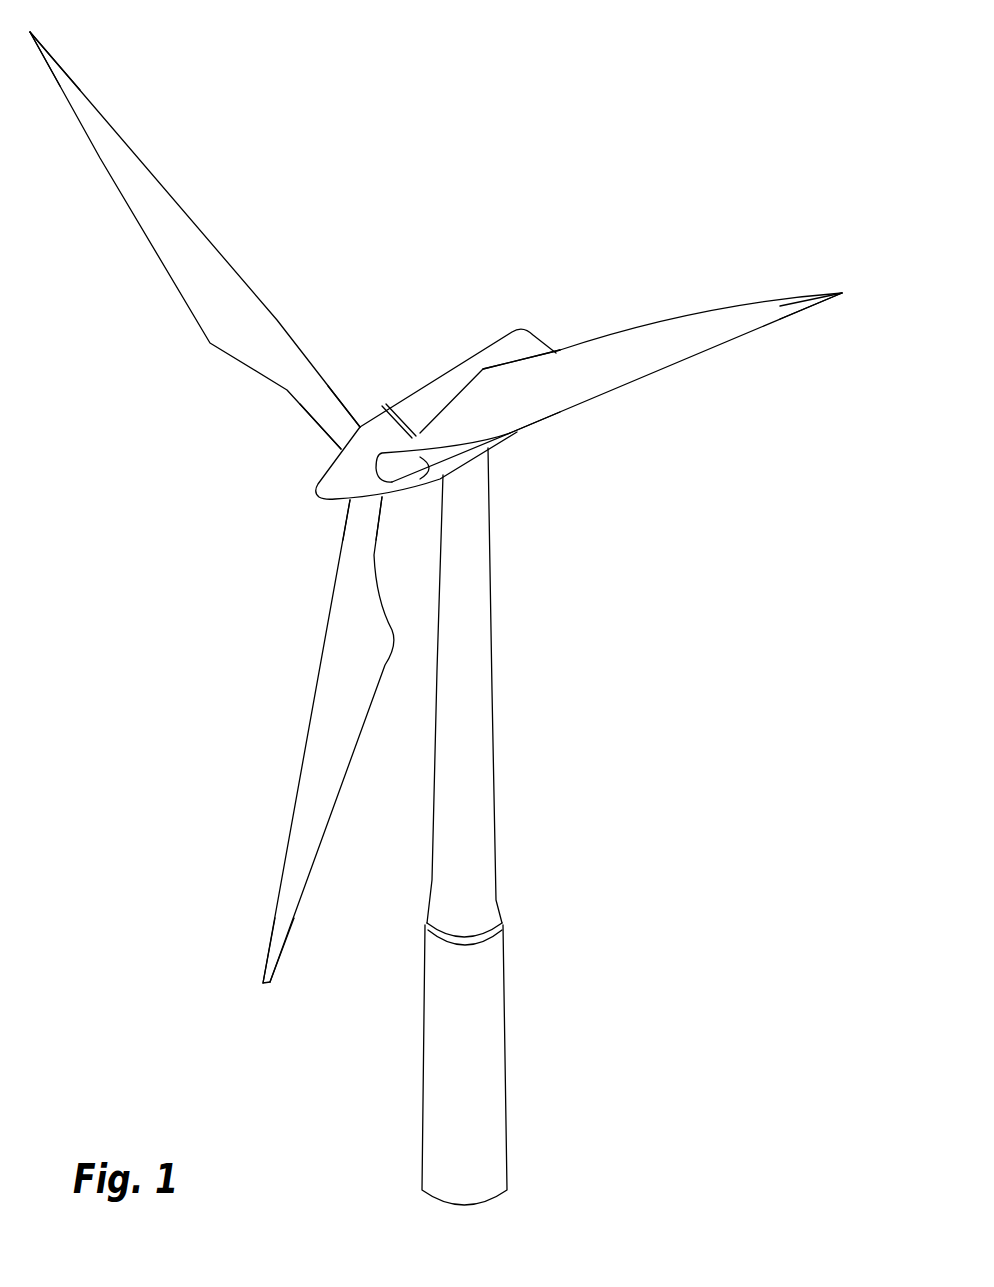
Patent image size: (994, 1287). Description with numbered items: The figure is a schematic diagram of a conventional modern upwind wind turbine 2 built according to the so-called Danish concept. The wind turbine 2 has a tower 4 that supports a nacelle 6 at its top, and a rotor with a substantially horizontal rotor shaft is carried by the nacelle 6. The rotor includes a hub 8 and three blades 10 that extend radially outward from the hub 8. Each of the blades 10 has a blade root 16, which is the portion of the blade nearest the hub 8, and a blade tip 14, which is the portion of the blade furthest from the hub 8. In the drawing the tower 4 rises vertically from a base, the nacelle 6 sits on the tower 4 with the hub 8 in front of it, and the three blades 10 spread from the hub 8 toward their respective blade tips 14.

The wind turbine 2 is at (603, 765).
The tower 4 is at (480, 685).
The nacelle 6 is at (430, 392).
The hub 8 is at (335, 474).
The blade 10 is at (228, 326).
The blade tip 14 is at (73, 88).
The blade root 16 is at (347, 430).